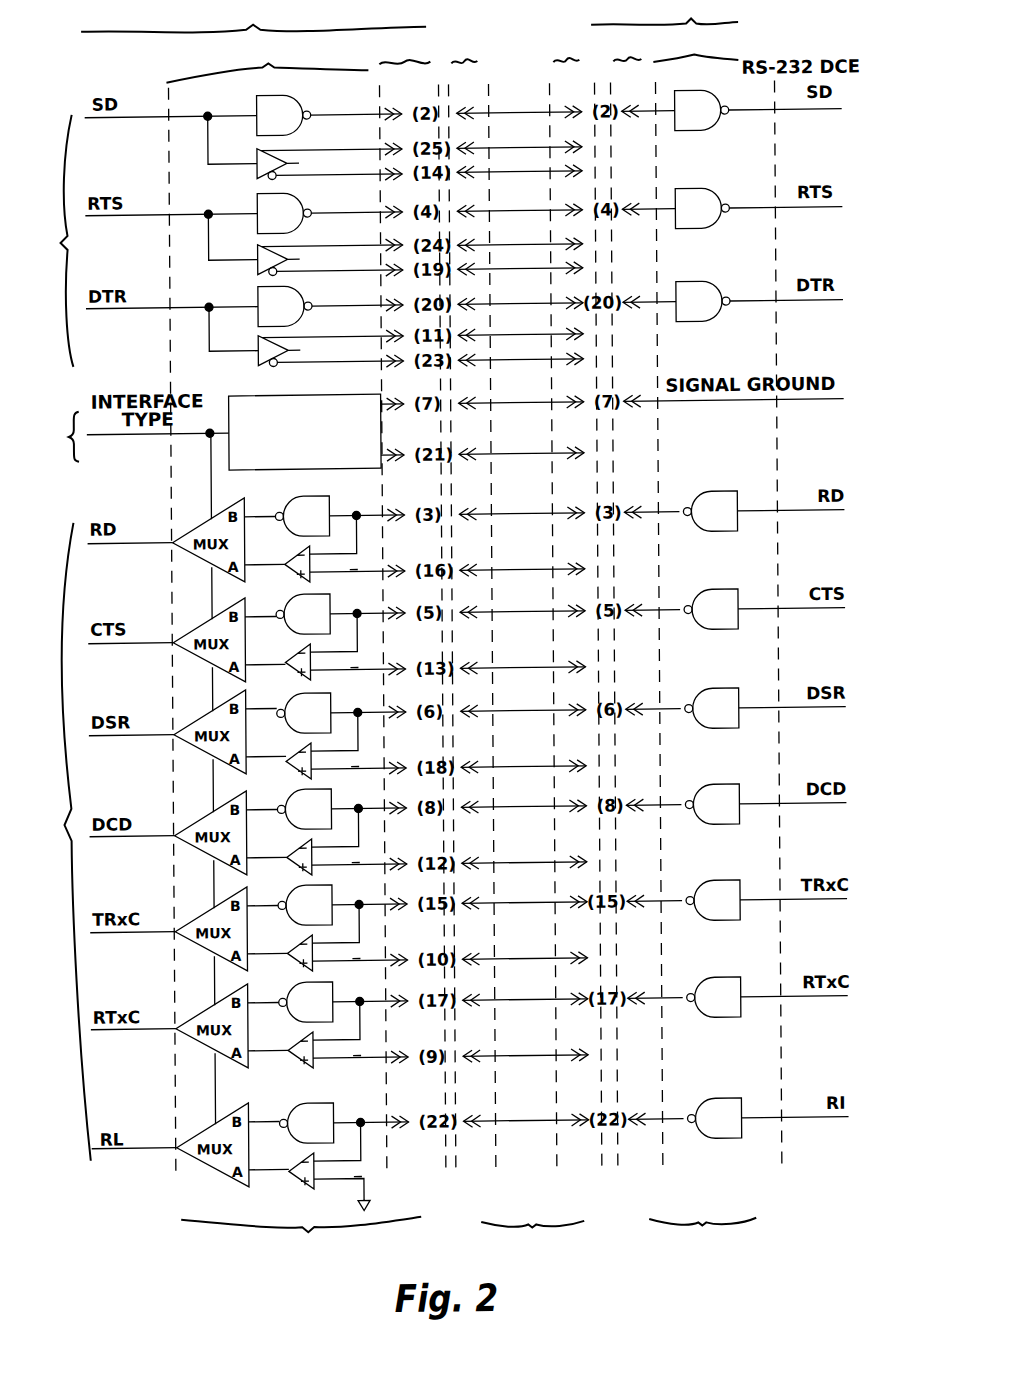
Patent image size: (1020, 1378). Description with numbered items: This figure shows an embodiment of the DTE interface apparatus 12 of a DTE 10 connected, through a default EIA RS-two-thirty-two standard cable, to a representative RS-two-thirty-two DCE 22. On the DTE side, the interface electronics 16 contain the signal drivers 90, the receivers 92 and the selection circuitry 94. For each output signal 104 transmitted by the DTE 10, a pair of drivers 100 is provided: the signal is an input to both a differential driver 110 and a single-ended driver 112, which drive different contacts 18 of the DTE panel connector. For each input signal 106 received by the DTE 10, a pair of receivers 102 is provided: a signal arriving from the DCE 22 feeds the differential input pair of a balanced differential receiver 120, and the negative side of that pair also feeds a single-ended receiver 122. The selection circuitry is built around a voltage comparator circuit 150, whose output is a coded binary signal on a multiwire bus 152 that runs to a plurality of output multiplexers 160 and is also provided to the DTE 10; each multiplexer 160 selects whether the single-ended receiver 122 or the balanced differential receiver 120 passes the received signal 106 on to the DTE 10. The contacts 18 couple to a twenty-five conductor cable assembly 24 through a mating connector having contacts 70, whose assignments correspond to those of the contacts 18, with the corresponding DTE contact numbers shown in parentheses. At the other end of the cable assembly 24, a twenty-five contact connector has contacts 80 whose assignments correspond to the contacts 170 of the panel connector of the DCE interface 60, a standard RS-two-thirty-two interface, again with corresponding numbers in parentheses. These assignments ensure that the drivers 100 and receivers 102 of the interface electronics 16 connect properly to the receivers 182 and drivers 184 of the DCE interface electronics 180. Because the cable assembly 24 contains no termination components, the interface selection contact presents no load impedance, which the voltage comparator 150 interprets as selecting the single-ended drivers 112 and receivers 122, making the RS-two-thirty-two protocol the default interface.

The DTE 10 is at (253, 19).
The DTE interface apparatus 12 is at (301, 1239).
The interface electronics 16 is at (267, 61).
The contacts 18 is at (404, 51).
The DCE 22 is at (664, 13).
The cable assembly 24 is at (532, 1237).
The DCE interface 60 is at (702, 1234).
The contacts 70 is at (464, 50).
The contacts 80 is at (566, 49).
The signal drivers 90 is at (54, 241).
The receivers 92 is at (63, 842).
The selection circuitry 94 is at (60, 437).
The drivers 100 is at (240, 169).
The receivers 102 is at (262, 793).
The output signal 104 is at (131, 86).
The input signal 106 is at (132, 814).
The differential driver 110 is at (330, 256).
The single-ended driver 112 is at (299, 98).
The balanced differential receiver 120 is at (347, 878).
The single-ended receiver 122 is at (342, 819).
The voltage comparator circuit 150 is at (281, 394).
The multiwire bus 152 is at (113, 437).
The output multiplexer 160 is at (233, 842).
The contacts 170 is at (630, 48).
The DCE RS-232 interface electronics 180 is at (695, 48).
The receivers 182 is at (727, 142).
The drivers 184 is at (736, 791).